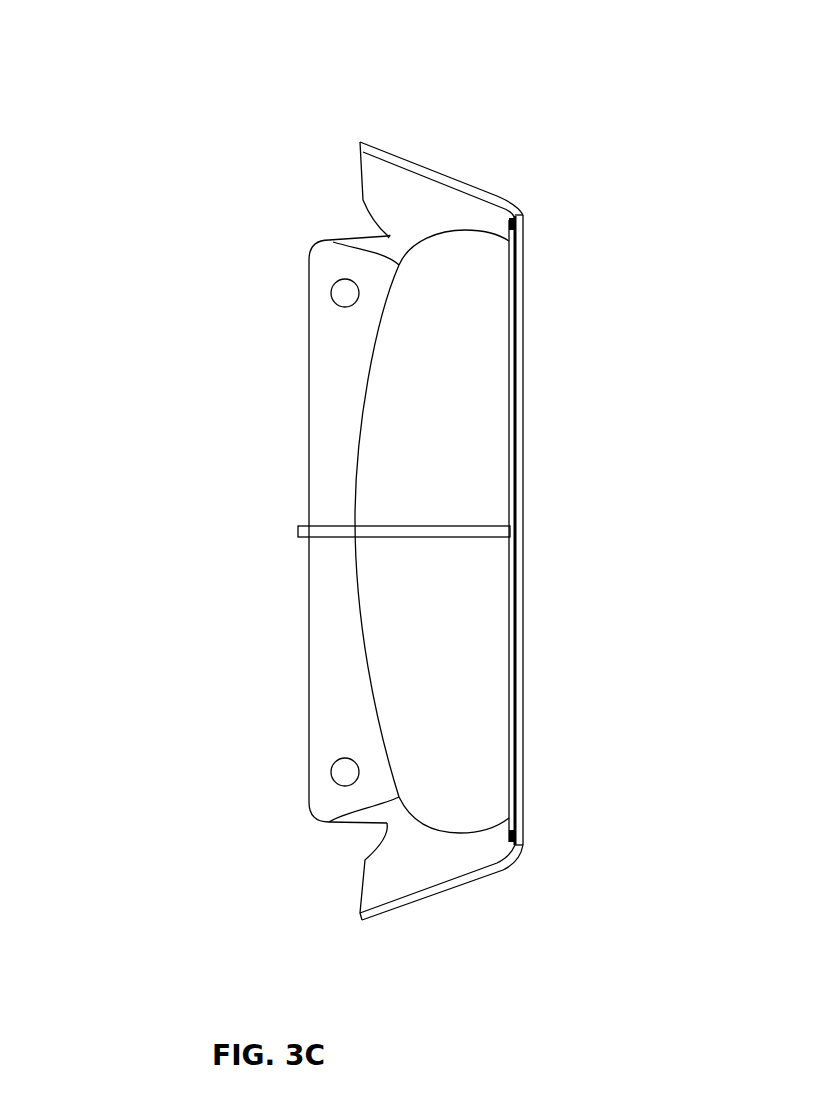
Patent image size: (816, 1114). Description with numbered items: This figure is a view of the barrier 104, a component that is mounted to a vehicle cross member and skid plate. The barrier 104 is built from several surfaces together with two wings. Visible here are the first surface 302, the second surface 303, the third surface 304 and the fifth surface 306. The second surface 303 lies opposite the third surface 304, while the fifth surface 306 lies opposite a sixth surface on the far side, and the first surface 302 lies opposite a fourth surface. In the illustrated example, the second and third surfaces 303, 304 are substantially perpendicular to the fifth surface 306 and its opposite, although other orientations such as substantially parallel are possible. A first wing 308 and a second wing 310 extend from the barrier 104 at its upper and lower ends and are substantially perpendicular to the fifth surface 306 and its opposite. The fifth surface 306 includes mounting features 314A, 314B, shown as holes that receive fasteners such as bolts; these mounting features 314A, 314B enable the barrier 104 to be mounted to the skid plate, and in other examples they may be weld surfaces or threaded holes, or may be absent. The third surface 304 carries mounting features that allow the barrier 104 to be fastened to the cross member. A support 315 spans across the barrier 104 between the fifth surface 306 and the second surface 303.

The barrier 104 is at (107, 58).
The first surface 302 is at (365, 468).
The second surface 303 is at (522, 387).
The third surface 304 is at (506, 258).
The fifth surface 306 is at (318, 492).
The first wing 308 is at (467, 180).
The second wing 310 is at (402, 906).
The mounting feature 314A is at (338, 755).
The mounting feature 314B is at (335, 280).
The support 315 is at (315, 537).